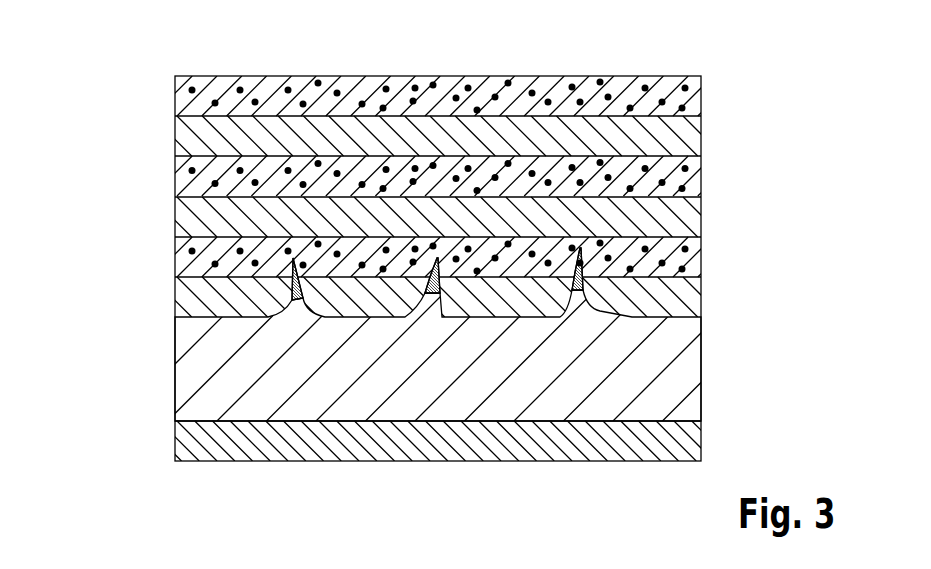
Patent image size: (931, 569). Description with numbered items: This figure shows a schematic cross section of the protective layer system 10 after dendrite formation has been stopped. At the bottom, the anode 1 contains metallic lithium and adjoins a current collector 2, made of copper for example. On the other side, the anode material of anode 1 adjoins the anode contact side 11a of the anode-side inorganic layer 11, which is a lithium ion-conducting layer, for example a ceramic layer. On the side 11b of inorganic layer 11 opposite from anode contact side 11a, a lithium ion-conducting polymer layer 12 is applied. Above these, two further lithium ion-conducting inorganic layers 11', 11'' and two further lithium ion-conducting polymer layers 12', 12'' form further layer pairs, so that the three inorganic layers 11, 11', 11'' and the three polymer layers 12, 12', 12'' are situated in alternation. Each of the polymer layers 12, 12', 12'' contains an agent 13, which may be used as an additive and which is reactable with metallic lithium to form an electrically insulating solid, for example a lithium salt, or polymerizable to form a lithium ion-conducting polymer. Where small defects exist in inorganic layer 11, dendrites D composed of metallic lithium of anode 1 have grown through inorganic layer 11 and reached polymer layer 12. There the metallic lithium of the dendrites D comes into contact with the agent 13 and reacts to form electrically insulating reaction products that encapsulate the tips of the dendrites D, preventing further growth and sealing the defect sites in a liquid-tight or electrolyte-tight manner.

The protective layer system 10 is at (116, 146).
The anode 1 is at (431, 334).
The current collector 2 is at (693, 442).
The anode-side inorganic layer 11 is at (456, 297).
The further inorganic layer 11' is at (459, 217).
The further inorganic layer 11'' is at (462, 136).
The anode contact side 11a is at (187, 319).
The side opposite from anode contact side 11b is at (190, 271).
The polymer layer 12 is at (456, 257).
The further polymer layer 12' is at (459, 176).
The further polymer layer 12'' is at (461, 96).
The agent 13 is at (340, 93).
The dendrites D is at (292, 296).